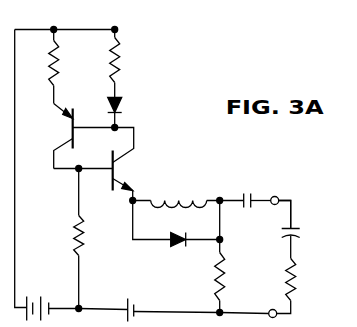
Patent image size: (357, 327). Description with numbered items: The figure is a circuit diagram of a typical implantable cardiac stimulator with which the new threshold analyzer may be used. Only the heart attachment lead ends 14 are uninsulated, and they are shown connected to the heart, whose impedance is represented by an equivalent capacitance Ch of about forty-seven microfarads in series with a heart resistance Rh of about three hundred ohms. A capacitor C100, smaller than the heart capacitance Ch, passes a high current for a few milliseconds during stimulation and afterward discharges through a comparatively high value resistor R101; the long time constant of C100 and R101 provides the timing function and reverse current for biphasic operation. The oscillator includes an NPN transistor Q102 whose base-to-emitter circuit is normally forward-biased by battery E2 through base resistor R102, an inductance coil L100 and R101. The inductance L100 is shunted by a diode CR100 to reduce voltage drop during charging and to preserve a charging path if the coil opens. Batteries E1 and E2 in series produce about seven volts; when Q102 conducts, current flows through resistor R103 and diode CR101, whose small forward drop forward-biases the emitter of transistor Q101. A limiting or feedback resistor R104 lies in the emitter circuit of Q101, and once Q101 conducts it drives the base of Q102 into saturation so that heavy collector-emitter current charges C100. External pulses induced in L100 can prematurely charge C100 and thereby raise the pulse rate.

The limiting or feedback resistor R104 is at (76, 63).
The resistor R103 is at (113, 54).
The diode CR101 is at (114, 98).
The transistor Q101 is at (63, 120).
The NPN transistor Q102 is at (117, 156).
The inductance coil L100 is at (207, 190).
The capacitor C100 is at (236, 172).
The heart attachment lead ends 14 is at (285, 188).
The equivalent capacitance Ch is at (293, 230).
The heart resistance Rh is at (289, 270).
The resistor R101 is at (217, 274).
The diode CR100 is at (183, 238).
The base resistor R102 is at (66, 242).
The battery E1 is at (46, 286).
The battery E2 is at (137, 284).